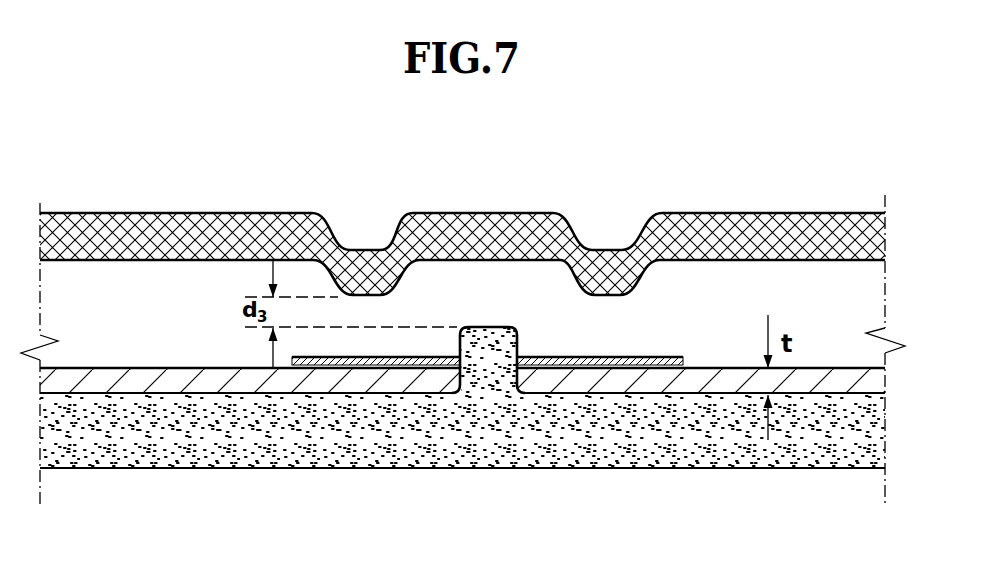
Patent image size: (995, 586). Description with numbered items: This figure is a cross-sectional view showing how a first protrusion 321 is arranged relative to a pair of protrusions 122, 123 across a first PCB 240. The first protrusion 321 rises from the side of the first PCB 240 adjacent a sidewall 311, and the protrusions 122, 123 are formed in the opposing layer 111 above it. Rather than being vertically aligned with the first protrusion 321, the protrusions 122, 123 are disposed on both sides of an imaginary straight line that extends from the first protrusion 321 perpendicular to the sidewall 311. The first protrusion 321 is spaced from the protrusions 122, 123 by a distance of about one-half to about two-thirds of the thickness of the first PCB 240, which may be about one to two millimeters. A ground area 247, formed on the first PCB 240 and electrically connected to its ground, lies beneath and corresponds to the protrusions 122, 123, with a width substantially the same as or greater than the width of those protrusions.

The upper substrate 111 is at (707, 220).
The second protrusion 122 is at (385, 203).
The protrusion 123 is at (615, 201).
The first protrusion 321 is at (497, 327).
The ground area 247 is at (575, 358).
The first PCB 240 is at (613, 377).
The sidewall 311 is at (220, 435).